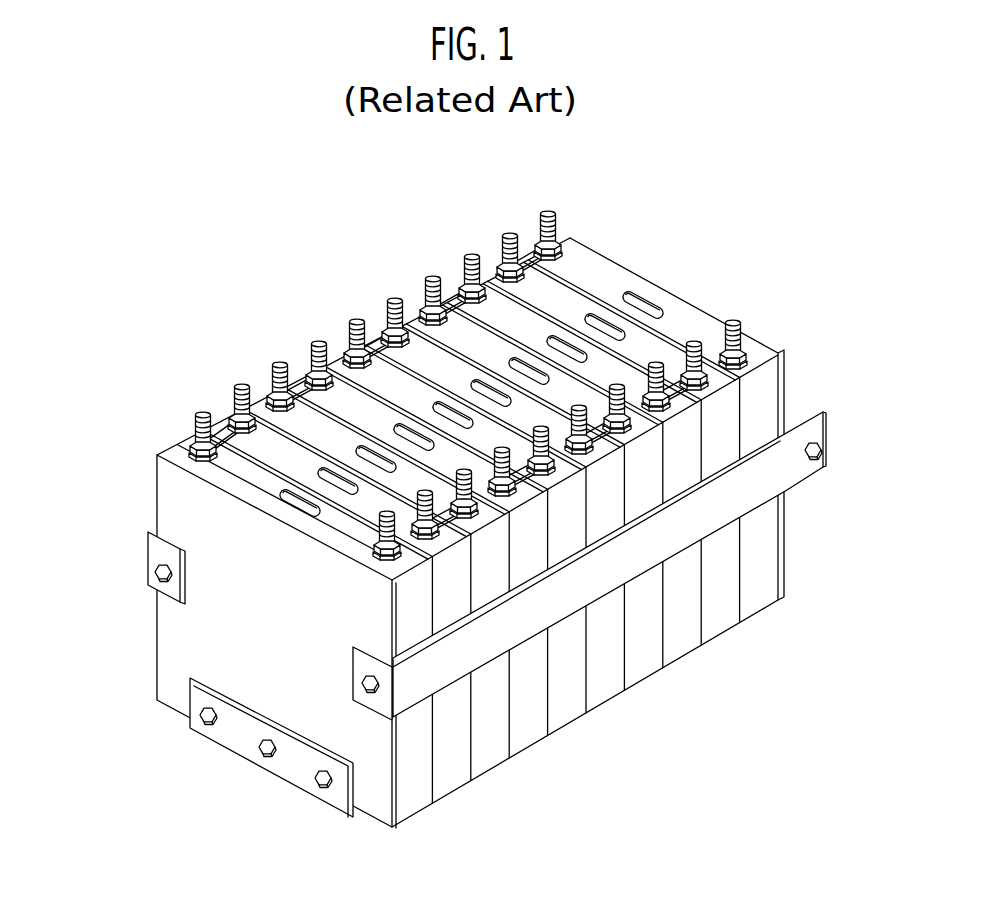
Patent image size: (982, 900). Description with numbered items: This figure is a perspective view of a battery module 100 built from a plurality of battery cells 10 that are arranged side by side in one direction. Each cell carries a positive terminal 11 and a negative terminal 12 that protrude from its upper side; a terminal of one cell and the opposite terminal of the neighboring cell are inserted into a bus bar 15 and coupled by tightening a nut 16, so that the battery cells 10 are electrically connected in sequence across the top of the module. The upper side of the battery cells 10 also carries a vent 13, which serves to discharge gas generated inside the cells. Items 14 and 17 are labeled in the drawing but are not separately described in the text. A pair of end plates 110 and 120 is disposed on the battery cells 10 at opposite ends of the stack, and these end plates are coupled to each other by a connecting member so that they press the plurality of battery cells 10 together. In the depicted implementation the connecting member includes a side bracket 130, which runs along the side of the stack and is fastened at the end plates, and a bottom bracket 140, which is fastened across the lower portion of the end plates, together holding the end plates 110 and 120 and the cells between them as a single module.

The battery module 100 is at (212, 257).
The battery cells 10 is at (715, 560).
The positive terminal 11 is at (548, 212).
The negative terminal 12 is at (733, 323).
The vent 13 is at (635, 300).
The bus bar 14 is at (588, 270).
The bus bar 15 is at (228, 414).
The nut 16 is at (274, 392).
The washer 17 is at (190, 447).
The end plate 110 is at (190, 642).
The end plate 120 is at (793, 540).
The side bracket 130 is at (147, 561).
The bottom bracket 140 is at (245, 735).